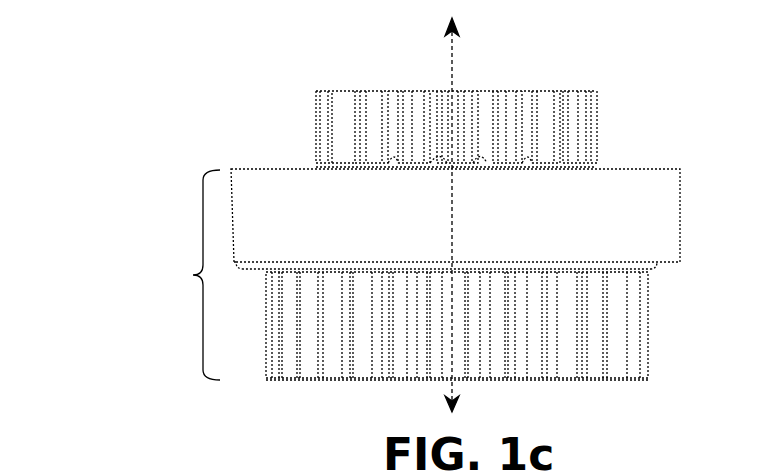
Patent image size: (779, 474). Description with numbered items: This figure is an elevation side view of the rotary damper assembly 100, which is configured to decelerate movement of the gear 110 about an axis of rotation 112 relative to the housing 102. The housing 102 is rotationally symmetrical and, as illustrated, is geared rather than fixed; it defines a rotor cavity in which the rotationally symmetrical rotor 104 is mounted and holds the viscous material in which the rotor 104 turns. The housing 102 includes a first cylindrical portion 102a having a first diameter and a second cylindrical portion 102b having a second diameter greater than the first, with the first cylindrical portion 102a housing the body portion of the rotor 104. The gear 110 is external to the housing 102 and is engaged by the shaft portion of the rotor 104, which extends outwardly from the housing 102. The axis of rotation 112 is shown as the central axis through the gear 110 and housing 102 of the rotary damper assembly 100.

The rotary damper assembly 100 is at (693, 60).
The housing 102 is at (200, 274).
The first cylindrical portion 102a is at (648, 327).
The second cylindrical portion 102b is at (683, 212).
The rotor 104 is at (452, 91).
The gear 110 is at (592, 136).
The axis of rotation 112 is at (447, 51).